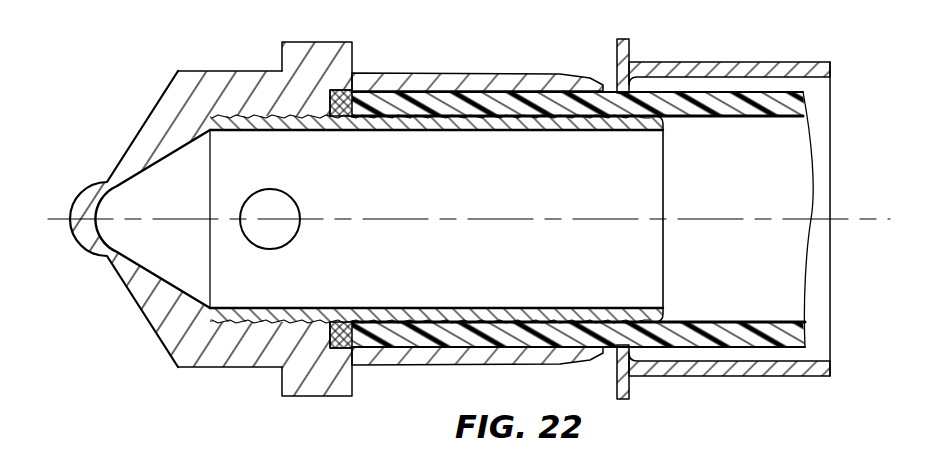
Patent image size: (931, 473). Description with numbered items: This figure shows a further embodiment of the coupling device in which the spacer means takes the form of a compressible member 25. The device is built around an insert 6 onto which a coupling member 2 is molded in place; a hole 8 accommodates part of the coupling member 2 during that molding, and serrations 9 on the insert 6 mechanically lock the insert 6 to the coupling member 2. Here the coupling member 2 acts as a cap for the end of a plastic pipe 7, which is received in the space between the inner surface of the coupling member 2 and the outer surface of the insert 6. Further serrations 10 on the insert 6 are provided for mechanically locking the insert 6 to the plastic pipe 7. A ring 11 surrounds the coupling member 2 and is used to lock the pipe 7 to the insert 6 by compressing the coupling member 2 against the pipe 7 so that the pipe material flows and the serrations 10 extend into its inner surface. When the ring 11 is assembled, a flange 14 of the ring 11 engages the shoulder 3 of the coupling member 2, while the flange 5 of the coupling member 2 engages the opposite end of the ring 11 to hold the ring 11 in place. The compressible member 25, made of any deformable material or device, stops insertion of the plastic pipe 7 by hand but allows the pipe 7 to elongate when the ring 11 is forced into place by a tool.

The coupling member 2 is at (121, 137).
The shoulder 3 is at (282, 52).
The flange 5 is at (588, 77).
The insert 6 is at (668, 247).
The plastic pipe 7 is at (707, 117).
The hole 8 is at (263, 203).
The serrations 9 is at (248, 307).
The serrations 10 is at (393, 132).
The ring 11 is at (728, 60).
The flange 14 is at (633, 42).
The compressible member 25 is at (362, 72).